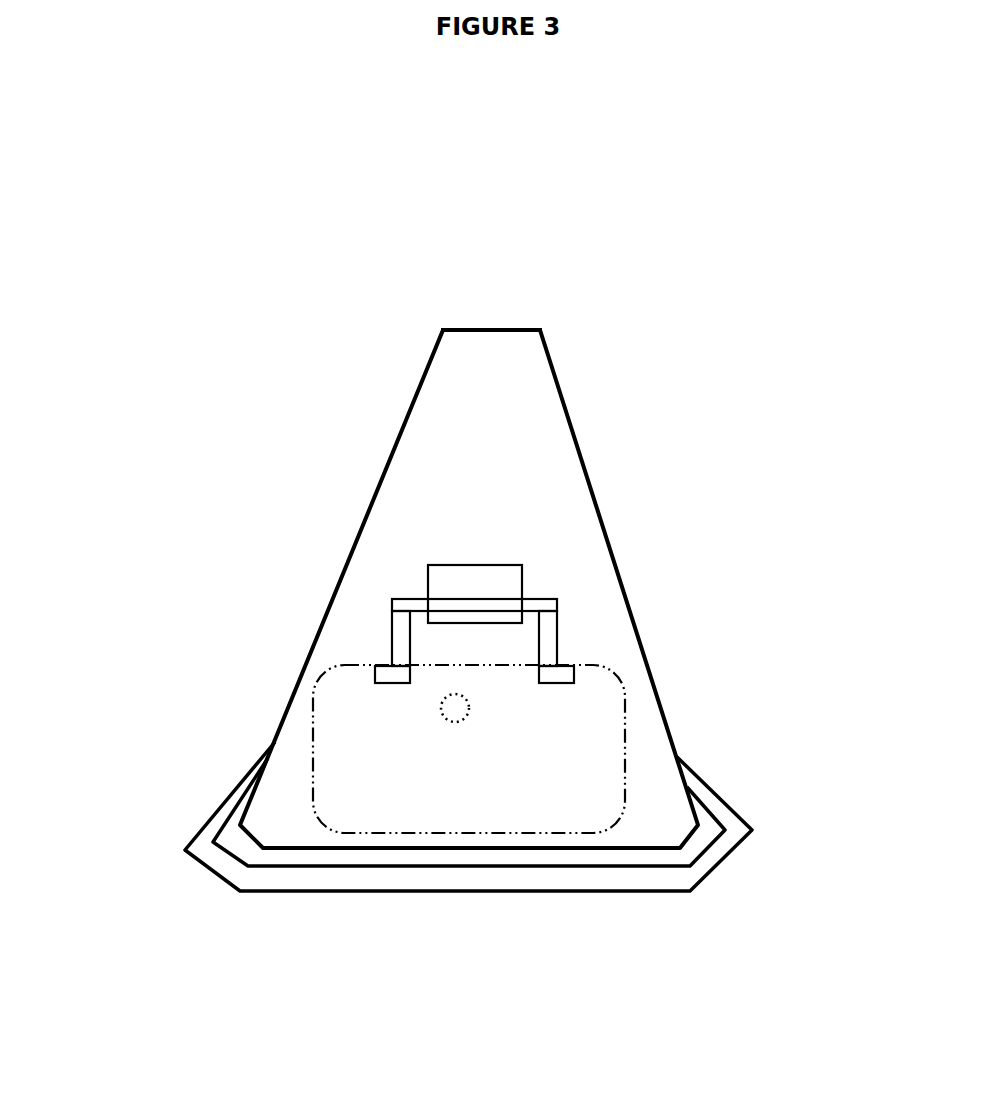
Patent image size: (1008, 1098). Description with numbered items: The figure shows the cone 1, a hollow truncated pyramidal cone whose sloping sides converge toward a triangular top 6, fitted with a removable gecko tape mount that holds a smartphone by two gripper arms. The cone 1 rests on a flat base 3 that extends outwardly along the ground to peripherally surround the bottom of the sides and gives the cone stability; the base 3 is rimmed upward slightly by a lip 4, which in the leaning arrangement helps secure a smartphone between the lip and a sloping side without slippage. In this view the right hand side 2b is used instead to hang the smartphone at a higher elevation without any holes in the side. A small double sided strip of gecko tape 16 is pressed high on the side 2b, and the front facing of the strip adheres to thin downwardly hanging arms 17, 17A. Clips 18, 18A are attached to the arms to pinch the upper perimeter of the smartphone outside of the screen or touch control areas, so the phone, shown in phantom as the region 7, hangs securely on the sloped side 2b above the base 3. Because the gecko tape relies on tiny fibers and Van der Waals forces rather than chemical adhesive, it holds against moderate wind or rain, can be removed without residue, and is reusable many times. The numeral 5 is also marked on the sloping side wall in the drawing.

The cone 1 is at (342, 408).
The side 2b is at (280, 803).
The base 3 is at (698, 840).
The lip 4 is at (733, 840).
The cone body side wall 5 is at (590, 477).
The top 6 is at (513, 328).
The housing cavity 7 is at (400, 790).
The gecko tape 16 is at (470, 585).
The arm 17 is at (557, 625).
The arm 17A is at (398, 637).
The clip 18 is at (555, 675).
The clip 18A is at (393, 673).